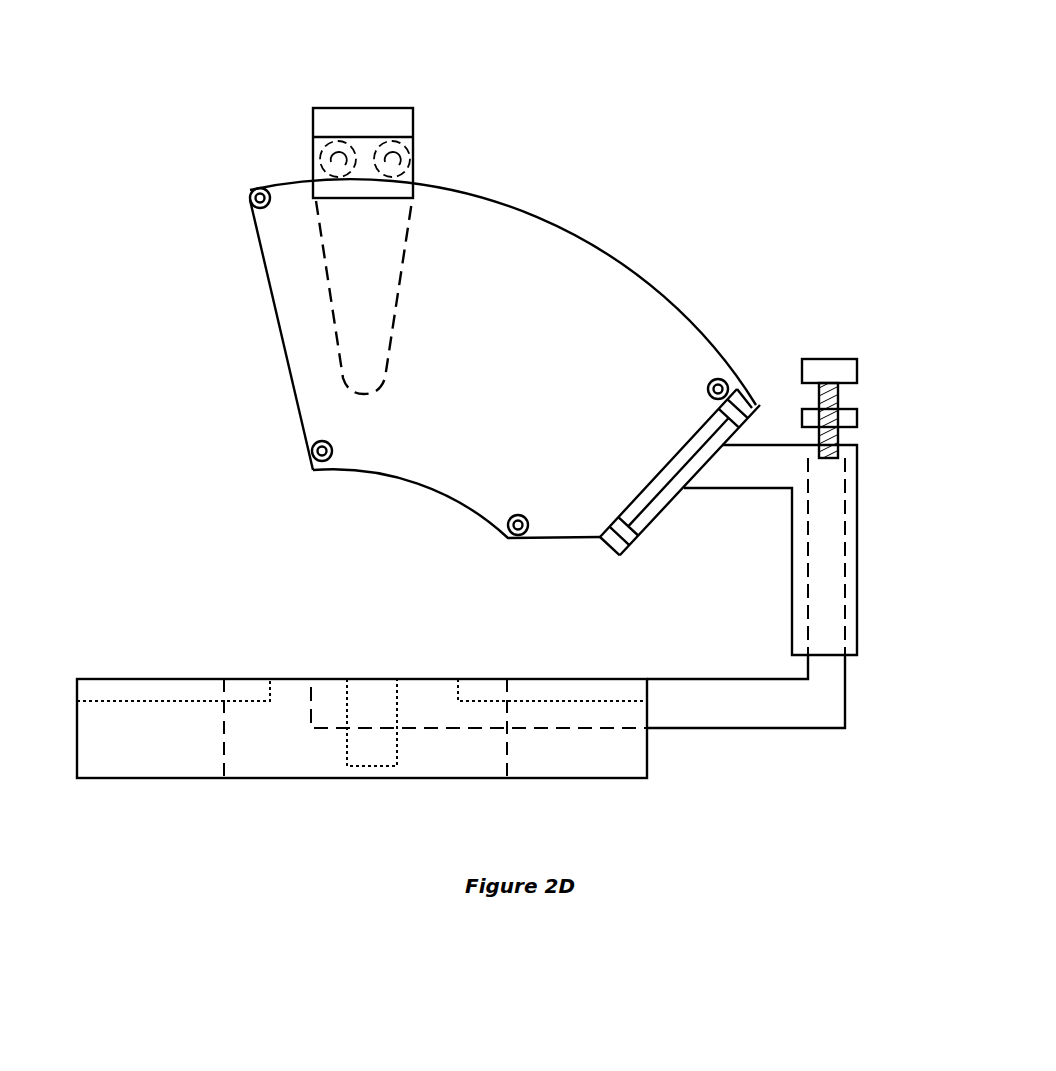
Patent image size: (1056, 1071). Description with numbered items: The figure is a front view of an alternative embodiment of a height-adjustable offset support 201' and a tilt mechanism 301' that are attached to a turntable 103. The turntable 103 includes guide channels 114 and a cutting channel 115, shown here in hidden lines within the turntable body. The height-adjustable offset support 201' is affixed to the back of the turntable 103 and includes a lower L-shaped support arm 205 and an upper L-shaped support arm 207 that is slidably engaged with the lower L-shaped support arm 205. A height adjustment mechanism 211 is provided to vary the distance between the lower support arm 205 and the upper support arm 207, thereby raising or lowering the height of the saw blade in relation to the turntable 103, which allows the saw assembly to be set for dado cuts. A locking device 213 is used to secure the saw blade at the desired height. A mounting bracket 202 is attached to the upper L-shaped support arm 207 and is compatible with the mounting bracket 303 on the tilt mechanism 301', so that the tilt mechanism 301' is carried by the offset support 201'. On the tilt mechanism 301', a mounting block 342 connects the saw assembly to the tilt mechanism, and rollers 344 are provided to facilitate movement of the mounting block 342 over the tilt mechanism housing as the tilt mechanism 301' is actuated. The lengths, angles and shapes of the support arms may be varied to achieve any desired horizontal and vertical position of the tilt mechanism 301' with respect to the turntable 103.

The turntable 103 is at (355, 778).
The guide channels 114 is at (158, 698).
The cutting channel 115 is at (370, 672).
The height-adjustable offset support 201' is at (998, 666).
The mounting bracket 202 is at (763, 397).
The lower L-shaped support arm 205 is at (740, 728).
The upper L-shaped support arm 207 is at (858, 550).
The height adjustment mechanism 211 is at (857, 370).
The locking device 213 is at (857, 418).
The tilt mechanism 301' is at (503, 353).
The mounting bracket 303 is at (743, 395).
The mounting block 342 is at (398, 108).
The rollers 344 is at (387, 155).